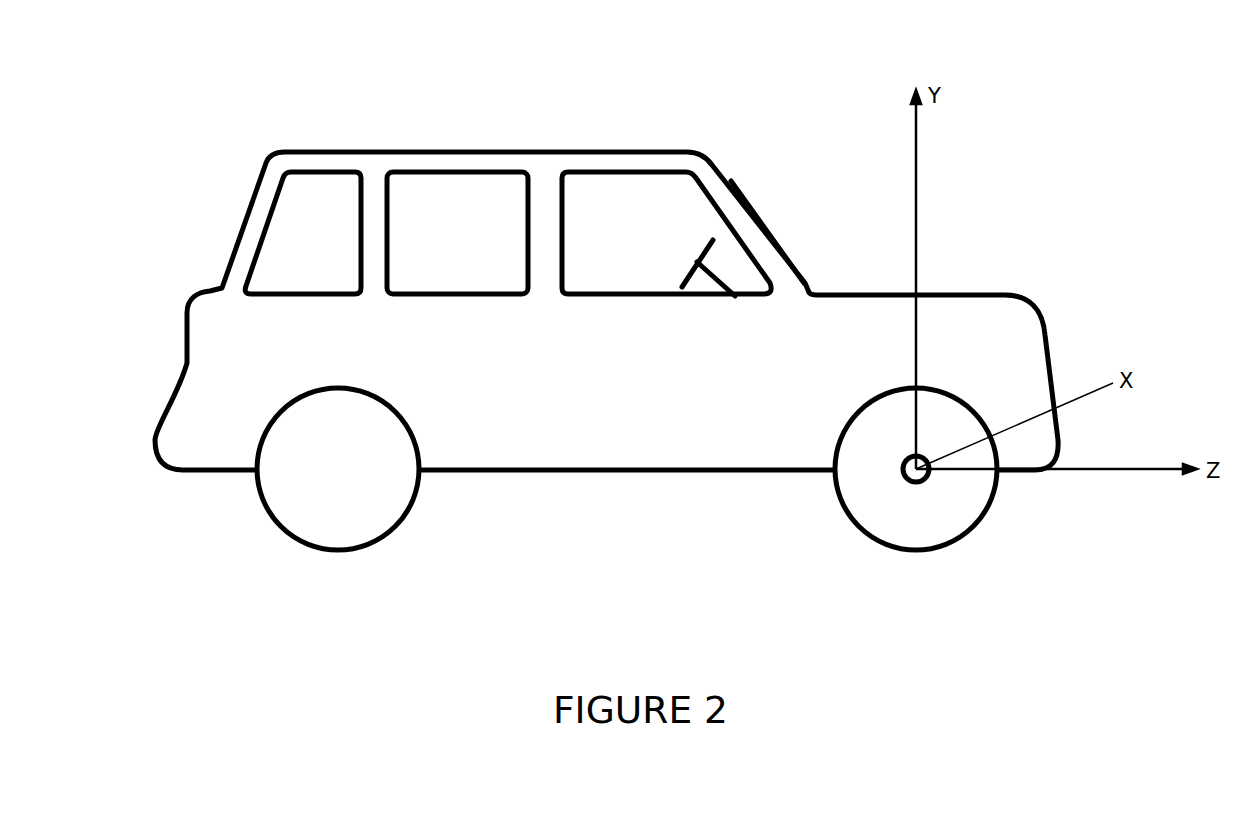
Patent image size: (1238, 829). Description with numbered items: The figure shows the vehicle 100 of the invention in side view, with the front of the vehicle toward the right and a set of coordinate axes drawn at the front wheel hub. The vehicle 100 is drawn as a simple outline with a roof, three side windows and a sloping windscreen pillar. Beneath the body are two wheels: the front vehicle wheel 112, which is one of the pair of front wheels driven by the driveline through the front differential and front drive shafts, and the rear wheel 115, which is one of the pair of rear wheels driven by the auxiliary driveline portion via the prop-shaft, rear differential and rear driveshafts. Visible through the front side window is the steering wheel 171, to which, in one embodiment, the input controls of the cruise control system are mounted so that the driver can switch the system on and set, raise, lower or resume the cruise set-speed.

The vehicle 100 is at (1088, 298).
The front vehicle wheel 112 is at (920, 515).
The rear wheel 115 is at (338, 513).
The steering wheel 171 is at (697, 260).